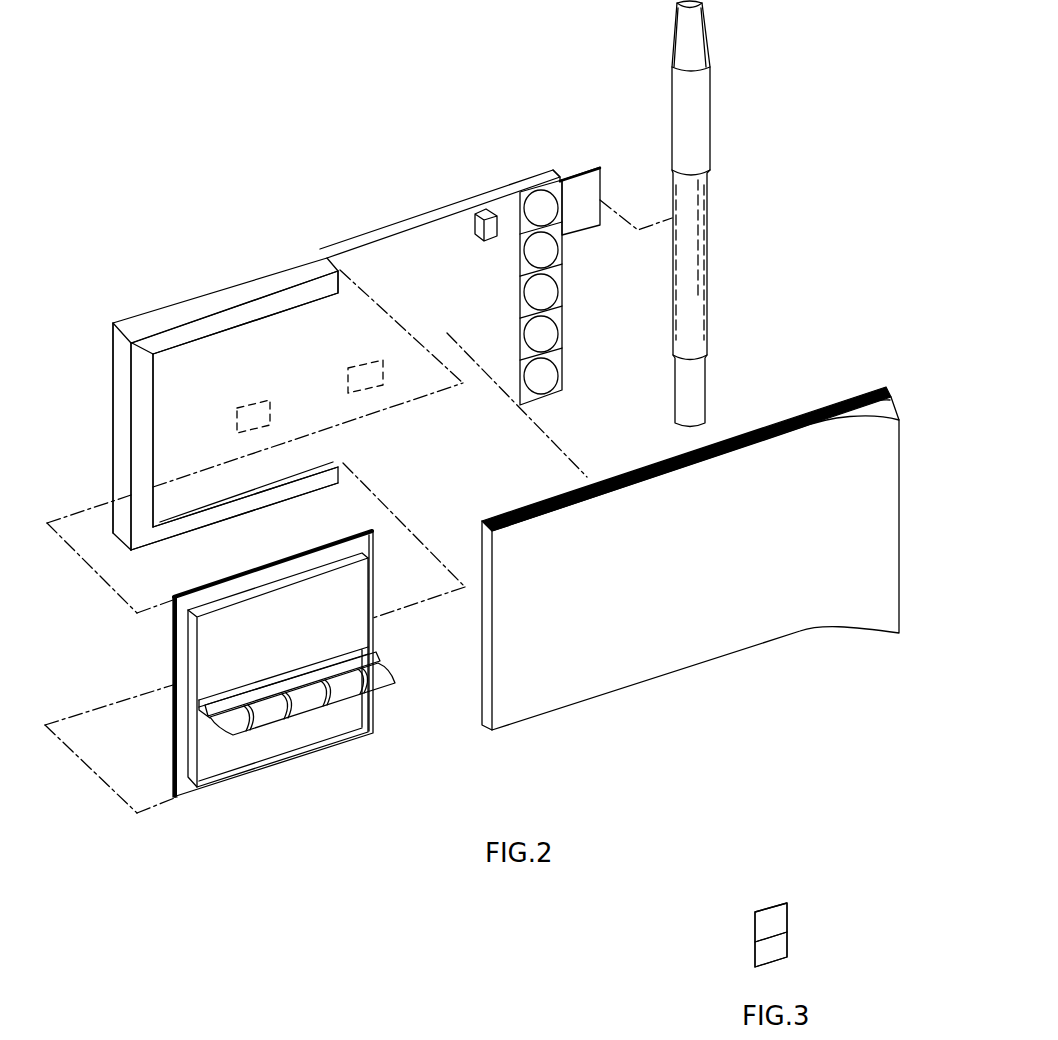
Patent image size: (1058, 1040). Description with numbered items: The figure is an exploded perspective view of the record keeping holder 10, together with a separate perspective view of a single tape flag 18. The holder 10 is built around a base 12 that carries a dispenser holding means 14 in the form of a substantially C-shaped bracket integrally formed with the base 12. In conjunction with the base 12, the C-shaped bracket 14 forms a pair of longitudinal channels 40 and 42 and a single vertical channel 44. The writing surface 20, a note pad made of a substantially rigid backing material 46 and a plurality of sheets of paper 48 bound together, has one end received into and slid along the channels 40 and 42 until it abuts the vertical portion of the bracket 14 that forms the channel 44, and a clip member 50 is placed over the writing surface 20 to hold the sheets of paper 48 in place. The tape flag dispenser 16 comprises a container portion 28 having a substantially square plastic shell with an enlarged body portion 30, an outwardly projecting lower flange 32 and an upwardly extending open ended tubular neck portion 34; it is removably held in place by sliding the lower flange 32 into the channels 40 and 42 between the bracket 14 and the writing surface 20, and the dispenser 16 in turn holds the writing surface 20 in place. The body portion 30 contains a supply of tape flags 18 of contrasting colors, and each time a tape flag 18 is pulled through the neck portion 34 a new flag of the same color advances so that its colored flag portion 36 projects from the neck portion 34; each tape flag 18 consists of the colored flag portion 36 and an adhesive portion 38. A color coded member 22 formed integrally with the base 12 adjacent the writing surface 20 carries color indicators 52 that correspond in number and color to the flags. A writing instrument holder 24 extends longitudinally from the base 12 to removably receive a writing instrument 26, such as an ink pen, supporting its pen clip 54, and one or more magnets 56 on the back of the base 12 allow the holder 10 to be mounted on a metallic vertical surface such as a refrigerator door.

In FIG. 2, the record keeping holder 10 is at (307, 172).
In FIG. 2, the base 12 is at (441, 280).
In FIG. 2, the dispenser holding means 14 is at (243, 384).
In FIG. 2, the tape flag dispenser 16 is at (273, 701).
In FIG. 2, the tape flag 18 is at (387, 695).
In FIG. 3, the tape flag 18 is at (776, 933).
In FIG. 2, the writing surface 20 is at (710, 553).
In FIG. 2, the color coded member 22 is at (583, 292).
In FIG. 2, the writing instrument holder 24 is at (575, 187).
In FIG. 2, the writing instrument 26 is at (691, 214).
In FIG. 2, the container portion 28 is at (258, 752).
In FIG. 2, the body portion 30 is at (333, 736).
In FIG. 2, the lower flange 32 is at (180, 788).
In FIG. 2, the neck portion 34 is at (370, 652).
In FIG. 3, the colored flag portion 36 is at (777, 913).
In FIG. 3, the adhesive portion 38 is at (780, 948).
In FIG. 2, the longitudinal channel 40 is at (320, 304).
In FIG. 2, the longitudinal channel 42 is at (272, 478).
In FIG. 2, the vertical channel 44 is at (162, 411).
In FIG. 2, the backing material 46 is at (808, 407).
In FIG. 2, the sheets of paper 48 is at (552, 698).
In FIG. 2, the clip member 50 is at (482, 212).
In FIG. 2, the color indicators 52 is at (545, 291).
In FIG. 2, the pen clip 54 is at (668, 34).
In FIG. 2, the magnets 56 is at (343, 378).